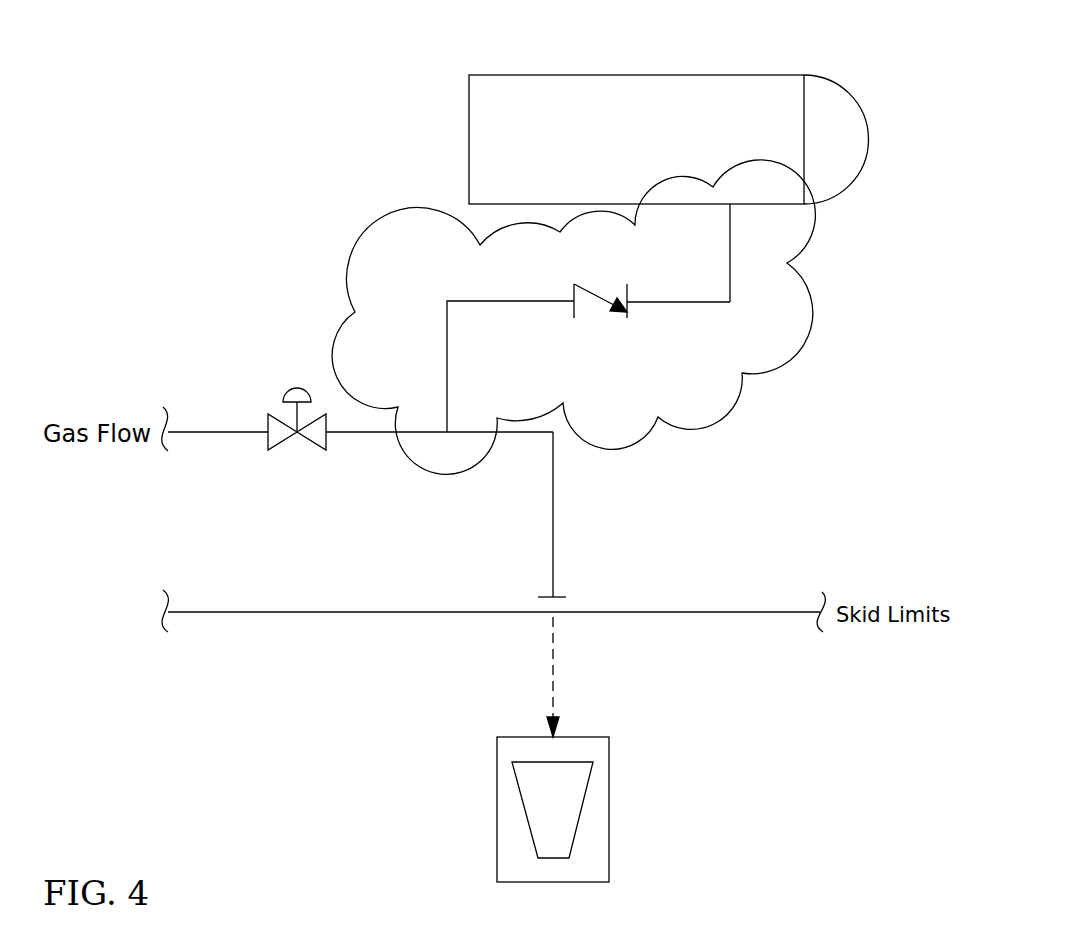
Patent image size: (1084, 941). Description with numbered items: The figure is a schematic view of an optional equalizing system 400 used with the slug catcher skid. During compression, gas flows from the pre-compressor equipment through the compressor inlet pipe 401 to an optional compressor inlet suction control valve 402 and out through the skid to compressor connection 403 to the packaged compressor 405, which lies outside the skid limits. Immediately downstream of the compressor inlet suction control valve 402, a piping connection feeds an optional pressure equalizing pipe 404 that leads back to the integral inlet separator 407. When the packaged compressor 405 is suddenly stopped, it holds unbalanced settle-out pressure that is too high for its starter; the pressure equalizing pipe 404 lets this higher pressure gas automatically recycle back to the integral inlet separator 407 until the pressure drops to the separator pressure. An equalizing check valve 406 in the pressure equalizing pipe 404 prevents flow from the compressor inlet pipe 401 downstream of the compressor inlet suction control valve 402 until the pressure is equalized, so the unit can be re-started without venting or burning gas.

The equalizing system 400 is at (813, 317).
The compressor inlet pipe 401 is at (200, 432).
The compressor inlet suction control valve 402 is at (283, 440).
The skid to compressor connection 403 is at (565, 596).
The pressure equalizing pipe 404 is at (455, 300).
The packaged compressor 405 is at (610, 780).
The equalizing check valve 406 is at (578, 313).
The integral inlet separator 407 is at (657, 75).